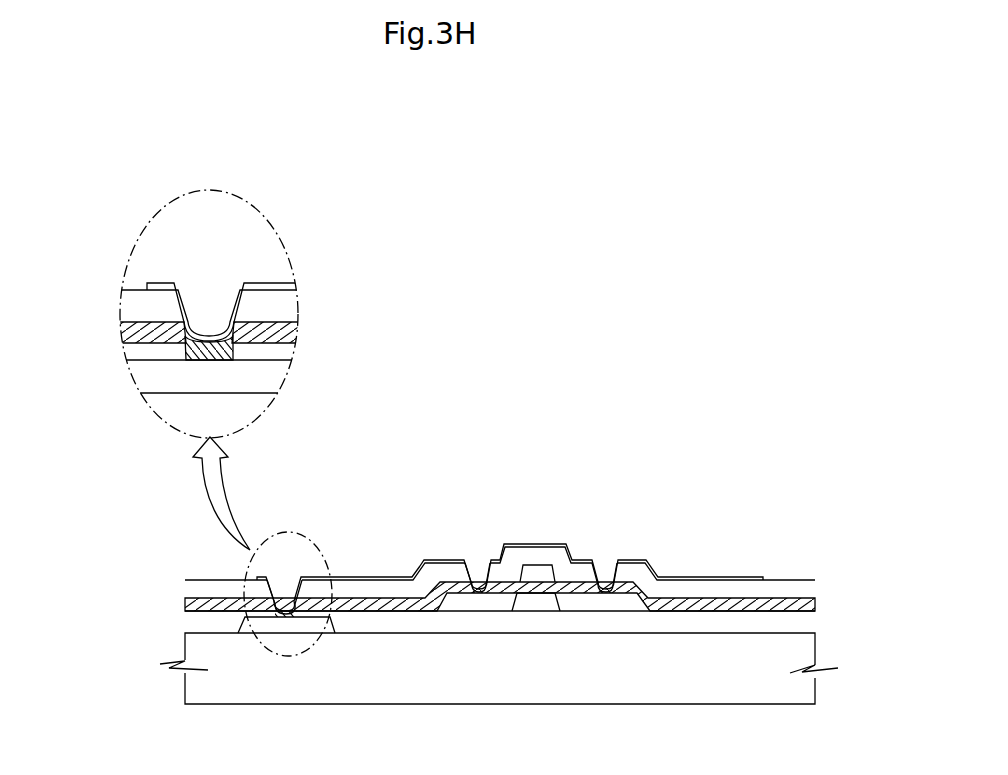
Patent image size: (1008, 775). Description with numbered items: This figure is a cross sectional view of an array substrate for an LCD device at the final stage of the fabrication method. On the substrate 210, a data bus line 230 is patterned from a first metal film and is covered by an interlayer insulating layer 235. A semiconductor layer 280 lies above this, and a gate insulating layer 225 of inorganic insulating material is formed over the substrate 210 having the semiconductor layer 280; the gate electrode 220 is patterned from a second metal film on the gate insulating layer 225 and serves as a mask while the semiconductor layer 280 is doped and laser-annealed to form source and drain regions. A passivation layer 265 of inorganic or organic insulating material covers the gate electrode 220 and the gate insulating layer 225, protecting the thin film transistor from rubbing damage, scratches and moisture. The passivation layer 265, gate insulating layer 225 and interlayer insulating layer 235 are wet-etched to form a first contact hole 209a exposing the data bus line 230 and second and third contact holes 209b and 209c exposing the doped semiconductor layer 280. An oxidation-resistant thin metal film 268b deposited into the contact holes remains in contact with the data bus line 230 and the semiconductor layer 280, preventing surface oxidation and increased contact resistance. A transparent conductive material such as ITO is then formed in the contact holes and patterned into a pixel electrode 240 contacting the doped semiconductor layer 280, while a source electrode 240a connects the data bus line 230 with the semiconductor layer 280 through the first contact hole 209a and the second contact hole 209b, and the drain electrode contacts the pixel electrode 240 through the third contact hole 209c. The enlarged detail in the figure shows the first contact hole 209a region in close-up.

The first contact hole 209a is at (287, 582).
The second contact hole 209b is at (480, 560).
The third contact hole 209c is at (605, 562).
The substrate 210 is at (800, 690).
The gate electrode 220 is at (538, 573).
The gate insulating layer 225 is at (707, 605).
The data bus line 230 is at (279, 623).
The interlayer insulating layer 235 is at (355, 622).
The pixel electrode 240 is at (714, 580).
The source electrode 240a is at (365, 578).
The passivation layer 265 is at (805, 592).
The thin metal film 268b is at (474, 608).
The semiconductor layer 280 is at (583, 611).